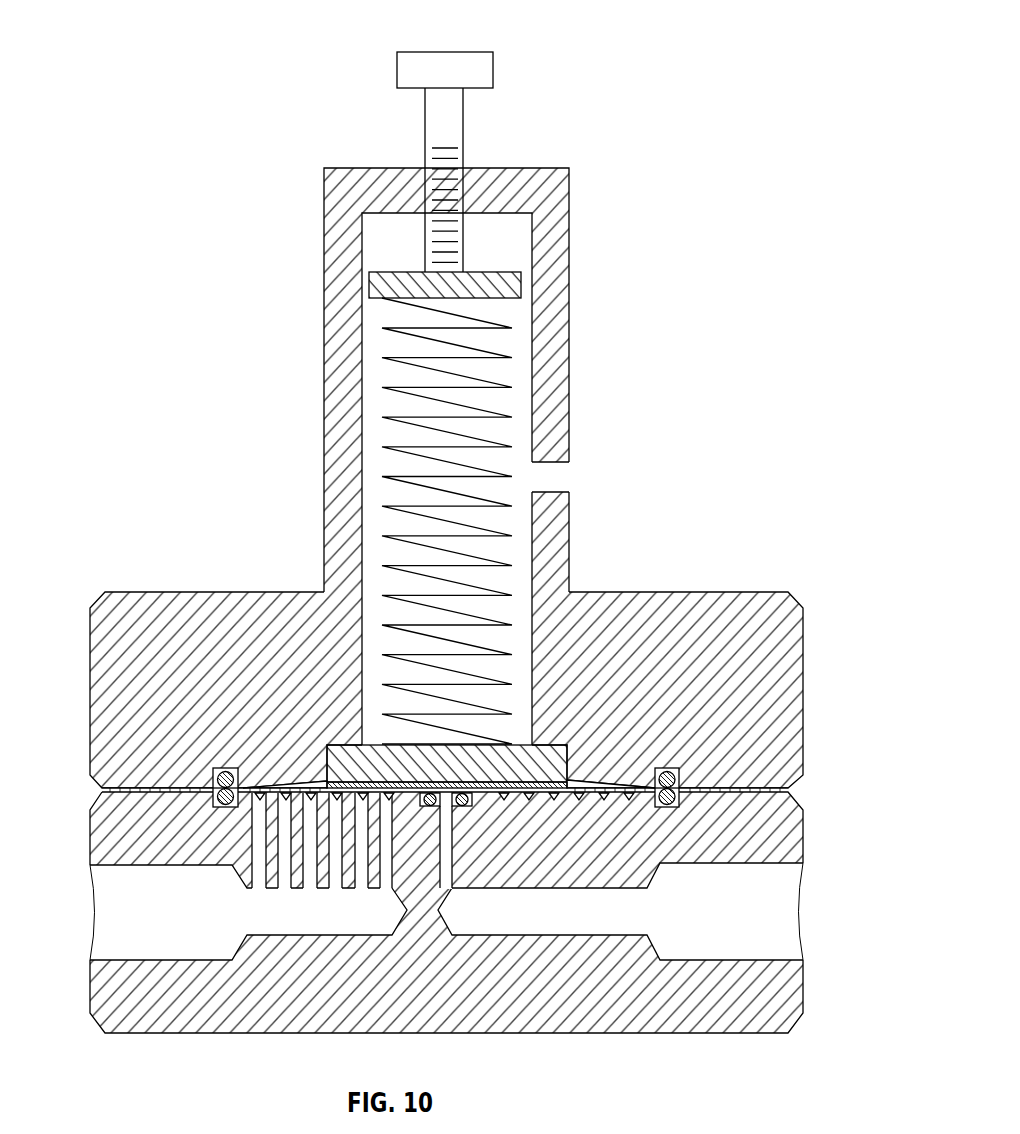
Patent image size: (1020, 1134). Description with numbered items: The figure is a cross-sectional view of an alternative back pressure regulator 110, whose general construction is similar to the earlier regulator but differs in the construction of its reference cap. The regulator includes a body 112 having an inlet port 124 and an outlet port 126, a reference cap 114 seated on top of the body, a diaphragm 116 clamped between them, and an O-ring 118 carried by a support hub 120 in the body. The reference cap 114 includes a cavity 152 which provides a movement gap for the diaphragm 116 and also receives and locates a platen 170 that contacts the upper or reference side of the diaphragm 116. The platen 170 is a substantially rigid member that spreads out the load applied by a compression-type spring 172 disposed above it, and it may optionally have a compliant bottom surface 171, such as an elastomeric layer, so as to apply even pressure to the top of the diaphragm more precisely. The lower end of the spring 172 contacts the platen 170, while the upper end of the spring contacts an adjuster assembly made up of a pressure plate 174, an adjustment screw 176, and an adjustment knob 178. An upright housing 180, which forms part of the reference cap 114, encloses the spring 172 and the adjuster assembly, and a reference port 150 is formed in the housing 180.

The back pressure regulator 110 is at (629, 161).
The body 112 is at (790, 832).
The reference cap 114 is at (793, 682).
The diaphragm 116 is at (125, 790).
The O-ring 118 is at (464, 800).
The support hub 120 is at (452, 806).
The inlet port 124 is at (175, 922).
The outlet port 126 is at (747, 922).
The reference port 150 is at (560, 466).
The cavity 152 is at (600, 773).
The platen 170 is at (547, 765).
The compliant bottom surface 171 is at (327, 784).
The compression-type spring 172 is at (497, 563).
The pressure plate 174 is at (520, 284).
The adjustment screw 176 is at (455, 133).
The adjustment knob 178 is at (473, 58).
The housing 180 is at (562, 403).